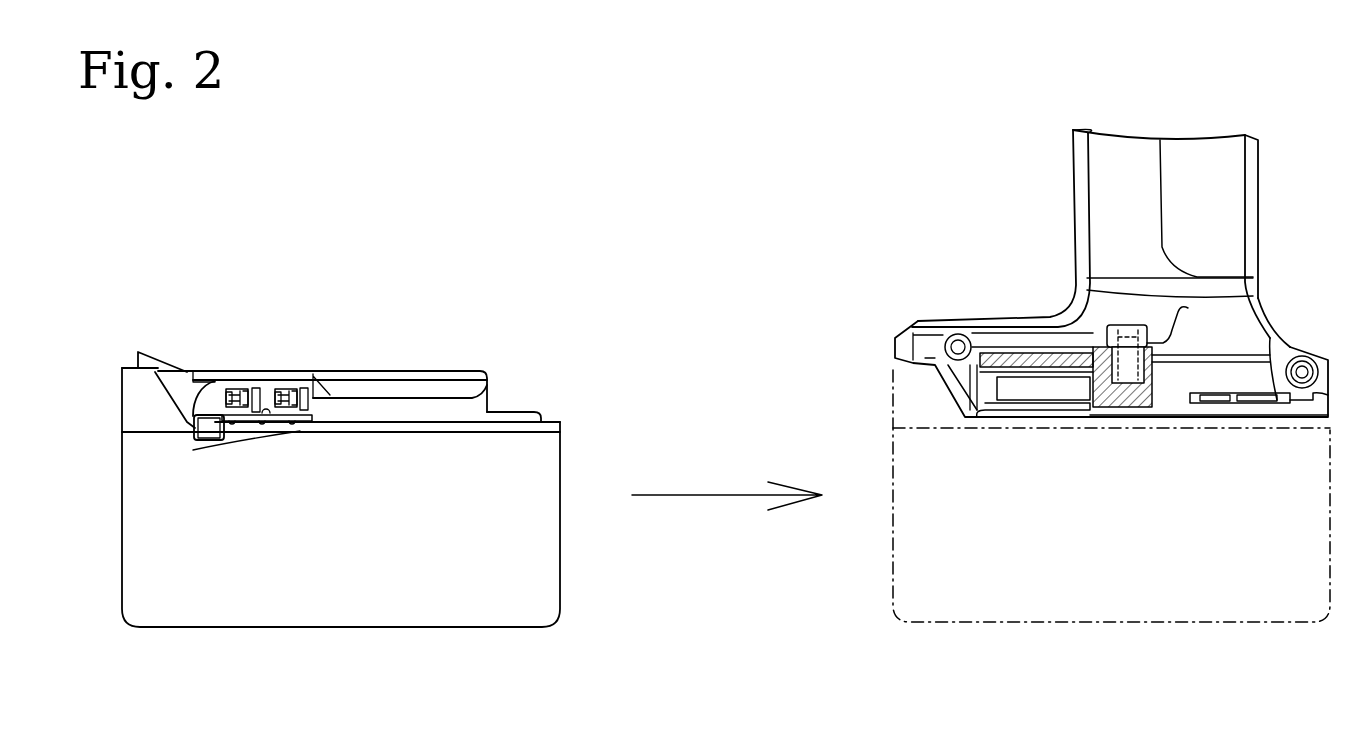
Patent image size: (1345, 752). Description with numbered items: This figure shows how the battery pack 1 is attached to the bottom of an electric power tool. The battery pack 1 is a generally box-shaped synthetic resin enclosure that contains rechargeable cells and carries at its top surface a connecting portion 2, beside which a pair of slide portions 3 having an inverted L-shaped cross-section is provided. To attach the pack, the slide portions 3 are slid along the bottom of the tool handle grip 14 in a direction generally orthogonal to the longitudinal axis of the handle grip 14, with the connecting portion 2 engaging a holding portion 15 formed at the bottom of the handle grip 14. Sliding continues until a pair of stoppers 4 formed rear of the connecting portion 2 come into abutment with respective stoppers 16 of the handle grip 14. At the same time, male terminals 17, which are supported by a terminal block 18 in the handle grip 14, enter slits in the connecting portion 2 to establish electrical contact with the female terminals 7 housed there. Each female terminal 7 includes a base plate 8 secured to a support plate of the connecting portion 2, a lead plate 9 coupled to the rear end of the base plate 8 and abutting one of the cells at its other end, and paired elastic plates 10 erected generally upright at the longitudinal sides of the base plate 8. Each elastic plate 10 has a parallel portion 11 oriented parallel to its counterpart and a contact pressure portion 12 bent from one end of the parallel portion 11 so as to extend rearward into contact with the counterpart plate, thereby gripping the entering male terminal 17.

The battery pack 1 is at (394, 349).
The connecting portion 2 is at (350, 367).
The slide portions 3 is at (435, 387).
The stoppers 4 is at (168, 393).
The female terminal 7 is at (266, 384).
The base plate 8 is at (273, 428).
The lead plate 9 is at (207, 441).
The elastic plates 10 is at (240, 382).
The parallel portion 11 is at (253, 428).
The contact pressure portion 12 is at (252, 428).
The handle grip 14 is at (1118, 183).
The holding portion 15 is at (1073, 410).
The stoppers 16 is at (953, 397).
The male terminals 17 is at (1020, 402).
The terminal block 18 is at (1077, 360).